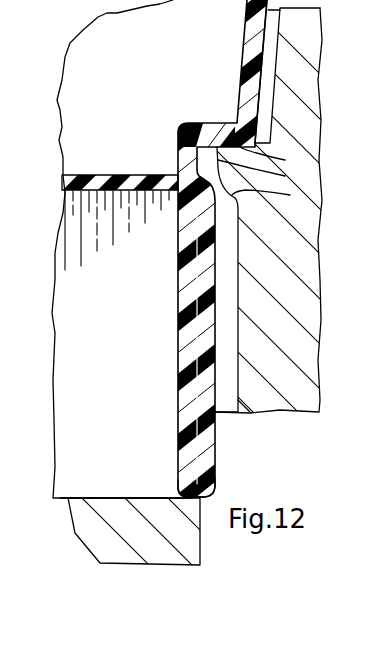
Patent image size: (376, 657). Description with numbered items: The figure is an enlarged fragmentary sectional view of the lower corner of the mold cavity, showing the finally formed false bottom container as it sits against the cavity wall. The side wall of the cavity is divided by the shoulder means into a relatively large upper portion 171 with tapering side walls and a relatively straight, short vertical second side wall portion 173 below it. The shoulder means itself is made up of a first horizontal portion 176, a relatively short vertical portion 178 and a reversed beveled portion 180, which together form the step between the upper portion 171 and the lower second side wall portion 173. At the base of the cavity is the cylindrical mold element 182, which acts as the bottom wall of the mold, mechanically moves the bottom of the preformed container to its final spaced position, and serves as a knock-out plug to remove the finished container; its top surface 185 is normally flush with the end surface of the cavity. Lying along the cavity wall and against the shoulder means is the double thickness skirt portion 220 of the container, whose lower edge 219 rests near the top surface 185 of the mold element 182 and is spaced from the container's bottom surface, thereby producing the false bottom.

The upper portion 171 is at (283, 34).
The second side wall portion 173 is at (238, 302).
The first horizontal portion 176 is at (285, 160).
The vertical portion 178 is at (285, 176).
The reversed beveled portion 180 is at (290, 195).
The mold element 182 is at (188, 545).
The top surface 185 is at (108, 497).
The edge 219 is at (214, 497).
The skirt portion 220 is at (210, 442).